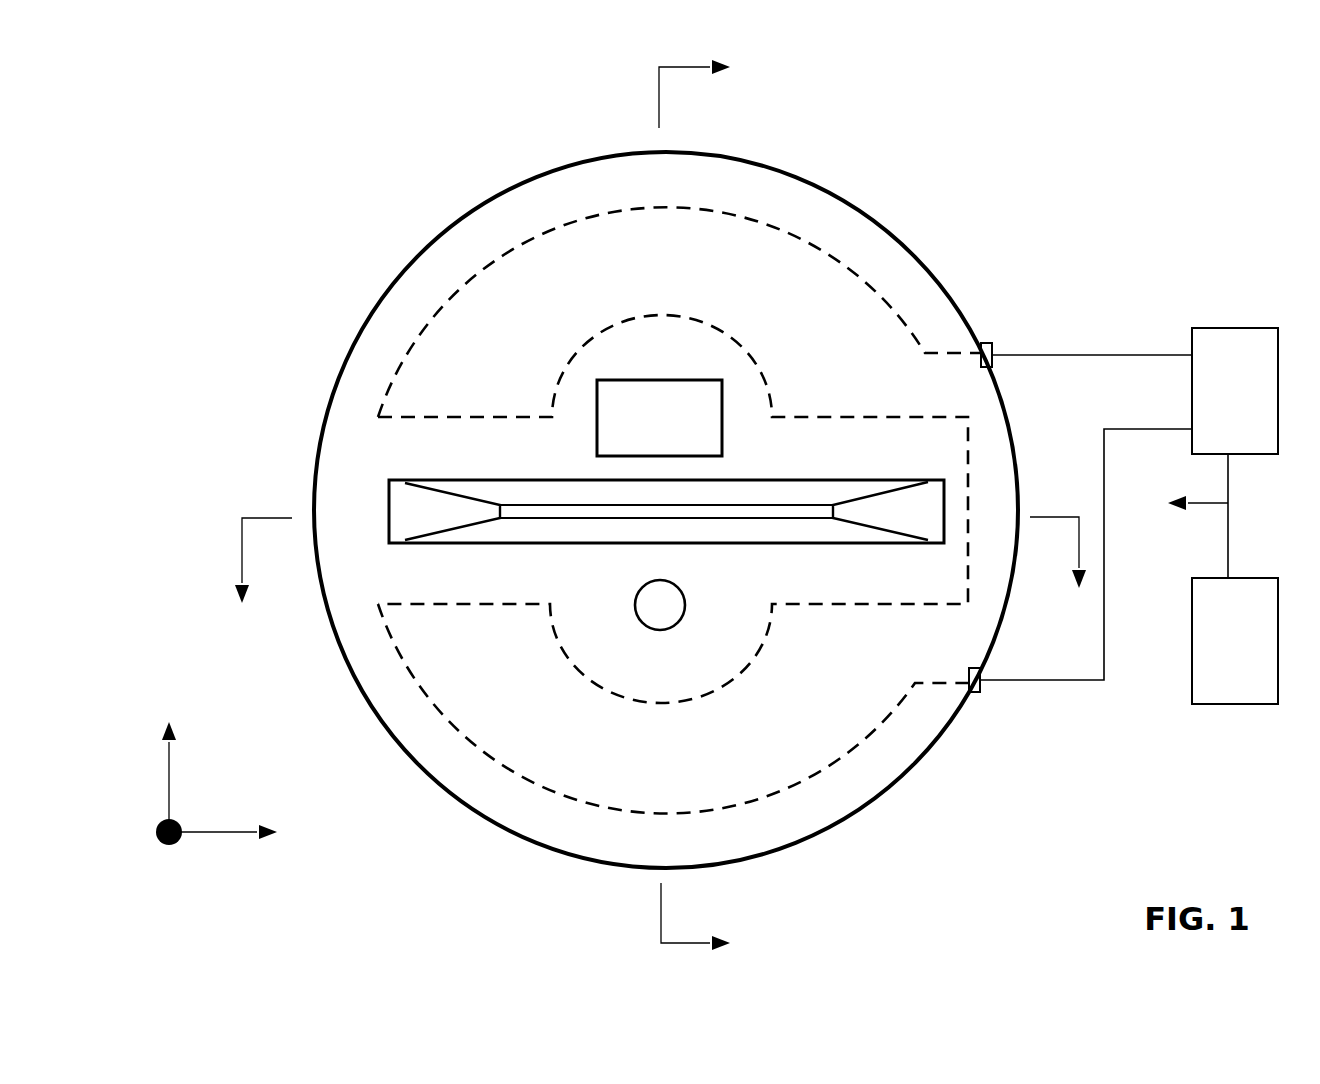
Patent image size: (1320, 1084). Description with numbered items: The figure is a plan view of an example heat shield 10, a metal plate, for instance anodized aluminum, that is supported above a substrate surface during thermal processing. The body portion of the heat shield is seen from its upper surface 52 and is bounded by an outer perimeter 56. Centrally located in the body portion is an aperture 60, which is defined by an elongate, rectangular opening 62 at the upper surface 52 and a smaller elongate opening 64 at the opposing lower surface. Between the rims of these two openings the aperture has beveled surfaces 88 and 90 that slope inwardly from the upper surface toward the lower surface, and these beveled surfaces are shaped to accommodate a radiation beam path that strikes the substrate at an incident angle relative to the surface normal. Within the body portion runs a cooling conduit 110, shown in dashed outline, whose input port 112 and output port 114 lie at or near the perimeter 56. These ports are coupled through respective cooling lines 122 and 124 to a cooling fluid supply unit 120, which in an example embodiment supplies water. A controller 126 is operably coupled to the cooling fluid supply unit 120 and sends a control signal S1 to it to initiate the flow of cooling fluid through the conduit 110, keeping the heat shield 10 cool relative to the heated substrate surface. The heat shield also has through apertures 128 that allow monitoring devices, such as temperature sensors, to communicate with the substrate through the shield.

The heat shield 10 is at (972, 150).
The upper surface 52 is at (797, 205).
The outer perimeter 56 is at (377, 303).
The aperture 60 is at (558, 560).
The opening 62 is at (835, 478).
The opening 64 is at (535, 521).
The beveled surface 88 is at (503, 493).
The beveled surface 90 is at (907, 503).
The cooling conduit 110 is at (498, 253).
The input port 112 is at (982, 692).
The output port 114 is at (993, 343).
The cooling fluid supply unit 120 is at (1235, 391).
The cooling line 122 is at (1043, 682).
The cooling line 124 is at (1122, 353).
The controller 126 is at (1235, 641).
The through aperture 128 is at (660, 418).
The control signal S1 is at (1205, 508).